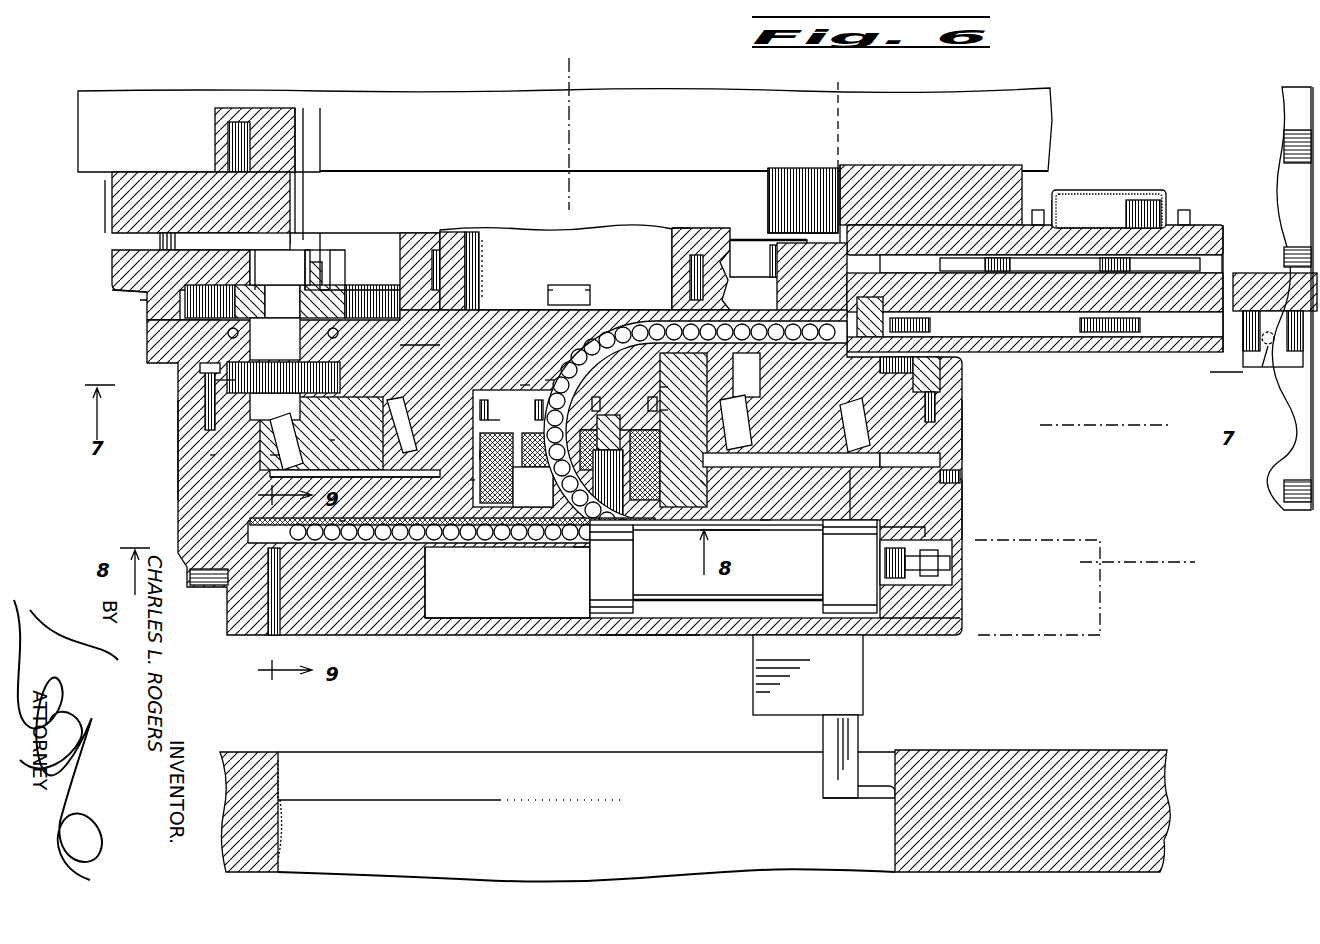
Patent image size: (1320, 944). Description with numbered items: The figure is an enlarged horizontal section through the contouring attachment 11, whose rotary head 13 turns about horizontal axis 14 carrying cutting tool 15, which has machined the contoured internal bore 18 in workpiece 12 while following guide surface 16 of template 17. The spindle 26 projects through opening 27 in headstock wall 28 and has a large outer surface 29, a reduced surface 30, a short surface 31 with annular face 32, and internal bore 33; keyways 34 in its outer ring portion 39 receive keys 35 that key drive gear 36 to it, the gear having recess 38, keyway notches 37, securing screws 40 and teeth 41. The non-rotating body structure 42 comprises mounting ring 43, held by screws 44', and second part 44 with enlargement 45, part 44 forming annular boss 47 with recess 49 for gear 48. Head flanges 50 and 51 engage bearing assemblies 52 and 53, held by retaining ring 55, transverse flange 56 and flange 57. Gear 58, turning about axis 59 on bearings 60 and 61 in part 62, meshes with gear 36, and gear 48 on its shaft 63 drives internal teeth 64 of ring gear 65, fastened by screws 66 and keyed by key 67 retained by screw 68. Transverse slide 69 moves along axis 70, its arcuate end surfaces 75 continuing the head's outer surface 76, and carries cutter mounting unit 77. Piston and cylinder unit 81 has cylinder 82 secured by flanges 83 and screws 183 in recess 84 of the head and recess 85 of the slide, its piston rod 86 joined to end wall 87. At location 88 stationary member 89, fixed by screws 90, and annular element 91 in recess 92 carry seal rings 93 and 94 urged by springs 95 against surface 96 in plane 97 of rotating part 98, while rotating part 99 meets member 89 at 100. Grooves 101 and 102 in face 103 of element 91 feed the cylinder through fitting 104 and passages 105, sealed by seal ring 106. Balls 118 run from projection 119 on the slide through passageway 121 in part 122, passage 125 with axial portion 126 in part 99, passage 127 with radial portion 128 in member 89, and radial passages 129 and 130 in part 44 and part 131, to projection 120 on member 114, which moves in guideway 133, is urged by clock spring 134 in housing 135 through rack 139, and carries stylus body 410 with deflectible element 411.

The contouring attachment 11 is at (93, 204).
The workpiece 12 is at (1050, 752).
The rotary head 13 is at (978, 512).
The horizontal axis 14 is at (571, 63).
The cutting tool 15 is at (870, 800).
The contoured guide surface 16 is at (1270, 472).
The template 17 is at (1270, 502).
The contoured internal bore 18 is at (284, 775).
The spindle 26 is at (502, 217).
The circular opening 27 is at (308, 112).
The vertical wall 28 is at (374, 96).
The first cylindrical outer surface 29 is at (845, 172).
The second external surface 30 is at (845, 240).
The third external cylindrical surface 31 is at (757, 277).
The outer transverse annular face 32 is at (680, 306).
The cylindrical bore 33 is at (470, 240).
The keyways 34 is at (566, 287).
The key elements 35 is at (550, 290).
The drive gear element 36 is at (800, 228).
The keyway notches 37 is at (590, 292).
The annular recess 38 is at (715, 232).
The axially outer ring portion 39 is at (686, 232).
The screws 40 is at (438, 250).
The gear teeth 41 is at (395, 284).
The stationary body structure 42 is at (99, 304).
The mounting ring 43 is at (118, 226).
The second part 44 is at (121, 324).
The screws 44' is at (245, 137).
The laterally projecting enlargement 45 is at (1198, 248).
The annular boss 47 is at (775, 468).
The gear 48 is at (190, 430).
The recess 49 is at (362, 435).
The annular flange 50 is at (965, 450).
The annular flange 51 is at (672, 419).
The ball-bearing assembly 52 is at (282, 453).
The ball-bearing assembly 53 is at (770, 430).
The retaining ring 55 is at (440, 352).
The transverse flange 56 is at (395, 478).
The flange 57 is at (330, 440).
The gear 58 is at (205, 330).
The axis 59 is at (333, 250).
The ball-bearing assembly 60 is at (215, 370).
The ball-bearing assembly 61 is at (258, 272).
The part 62 is at (165, 275).
The shaft 63 is at (272, 309).
The internal teeth 64 is at (210, 410).
The ring gear 65 is at (200, 385).
The screws 66 is at (215, 450).
The key 67 is at (945, 380).
The screw 68 is at (940, 408).
The transverse slide 69 is at (656, 650).
The slide axis 70 is at (1142, 565).
The arcuate end surfaces 75 is at (188, 570).
The outer cylindrical surface 76 is at (964, 431).
The cutter mounting unit 77 is at (870, 665).
The piston and cylinder unit 81 is at (772, 581).
The cylinder 82 is at (702, 640).
The flanges 83 is at (853, 470).
The recess 84 is at (928, 528).
The recess 85 is at (522, 640).
The piston rod 86 is at (965, 618).
The end wall 87 is at (950, 578).
The meeting location 88 is at (662, 450).
The member 89 is at (508, 318).
The screws 90 is at (380, 261).
The annular element 91 is at (550, 380).
The recess 92 is at (520, 388).
The seal ring 93 is at (480, 438).
The seal ring 94 is at (615, 395).
The springs 95 is at (498, 438).
The transverse annular planar surface 96 is at (478, 452).
The transverse plane 97 is at (1120, 425).
The annular part 98 is at (640, 540).
The part 99 is at (572, 548).
The meeting location 100 is at (516, 468).
The annular groove 101 is at (710, 430).
The annular groove 102 is at (679, 387).
The transverse face 103 is at (475, 482).
The fitting 104 is at (634, 578).
The passages 105 is at (768, 500).
The seal ring 106 is at (690, 478).
The elongated member 114 is at (1254, 272).
The spherical balls 118 is at (468, 548).
The projection 119 is at (252, 585).
The projection 120 is at (876, 300).
The cylindrical passageway 121 is at (345, 542).
The part 122 is at (385, 545).
The passage 125 is at (548, 543).
The axial portion 126 is at (531, 487).
The curving passage 127 is at (610, 318).
The radial portion 128 is at (790, 343).
The radial passage 129 is at (812, 290).
The radial passage 130 is at (922, 312).
The part 131 is at (1086, 353).
The guideway 133 is at (1228, 240).
The coiled clock type spring 134 is at (1127, 200).
The housing 135 is at (1163, 195).
The rack 139 is at (1058, 232).
The screws 183 is at (856, 545).
The body section 410 is at (1241, 360).
The deflectible stylus element 411 is at (1228, 420).